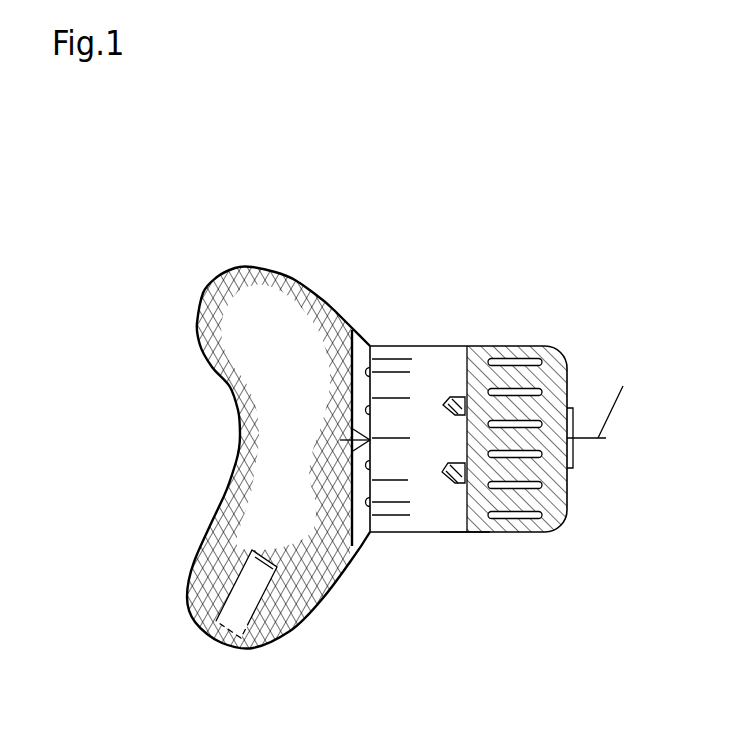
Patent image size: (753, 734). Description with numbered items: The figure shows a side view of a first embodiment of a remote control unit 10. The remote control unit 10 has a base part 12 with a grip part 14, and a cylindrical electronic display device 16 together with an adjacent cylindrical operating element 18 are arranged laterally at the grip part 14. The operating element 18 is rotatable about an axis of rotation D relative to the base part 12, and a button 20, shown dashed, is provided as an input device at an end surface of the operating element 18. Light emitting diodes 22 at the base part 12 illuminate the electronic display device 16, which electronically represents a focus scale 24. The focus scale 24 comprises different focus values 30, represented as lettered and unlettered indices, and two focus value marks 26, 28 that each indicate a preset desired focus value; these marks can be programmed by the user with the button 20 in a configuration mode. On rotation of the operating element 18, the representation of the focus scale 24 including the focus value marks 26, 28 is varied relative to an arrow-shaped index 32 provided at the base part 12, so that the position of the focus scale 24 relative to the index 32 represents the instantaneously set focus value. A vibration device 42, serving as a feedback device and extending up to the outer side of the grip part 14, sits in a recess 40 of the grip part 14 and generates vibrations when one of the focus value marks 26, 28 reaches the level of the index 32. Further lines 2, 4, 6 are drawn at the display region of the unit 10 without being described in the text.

The remote control unit 10 is at (557, 237).
The base part 12 is at (237, 436).
The grip part 14 is at (263, 490).
The electronic display device 16 is at (413, 533).
The operating element 18 is at (528, 533).
The button 20 is at (570, 452).
The light emitting diodes 22 is at (367, 408).
The focus scale 24 is at (414, 358).
The focus value mark 26 is at (464, 533).
The focus value mark 28 is at (460, 397).
The focus values 30 is at (406, 481).
The arrow-shaped index 32 is at (340, 458).
The lower guide 2 is at (410, 502).
The middle guide 4 is at (410, 438).
The upper guide 6 is at (410, 372).
The recess 40 is at (255, 623).
The vibration device 42 is at (225, 620).